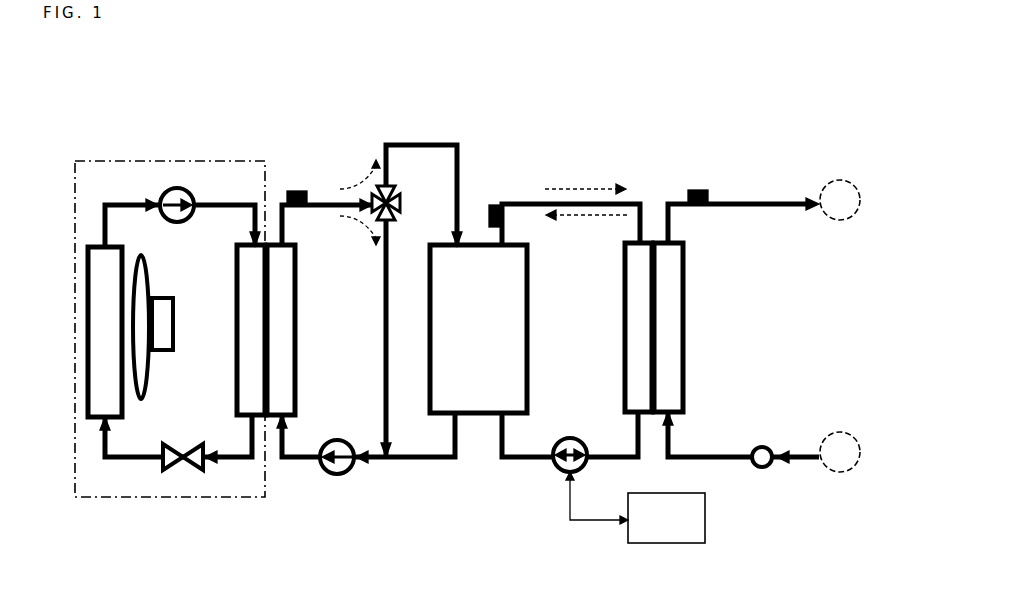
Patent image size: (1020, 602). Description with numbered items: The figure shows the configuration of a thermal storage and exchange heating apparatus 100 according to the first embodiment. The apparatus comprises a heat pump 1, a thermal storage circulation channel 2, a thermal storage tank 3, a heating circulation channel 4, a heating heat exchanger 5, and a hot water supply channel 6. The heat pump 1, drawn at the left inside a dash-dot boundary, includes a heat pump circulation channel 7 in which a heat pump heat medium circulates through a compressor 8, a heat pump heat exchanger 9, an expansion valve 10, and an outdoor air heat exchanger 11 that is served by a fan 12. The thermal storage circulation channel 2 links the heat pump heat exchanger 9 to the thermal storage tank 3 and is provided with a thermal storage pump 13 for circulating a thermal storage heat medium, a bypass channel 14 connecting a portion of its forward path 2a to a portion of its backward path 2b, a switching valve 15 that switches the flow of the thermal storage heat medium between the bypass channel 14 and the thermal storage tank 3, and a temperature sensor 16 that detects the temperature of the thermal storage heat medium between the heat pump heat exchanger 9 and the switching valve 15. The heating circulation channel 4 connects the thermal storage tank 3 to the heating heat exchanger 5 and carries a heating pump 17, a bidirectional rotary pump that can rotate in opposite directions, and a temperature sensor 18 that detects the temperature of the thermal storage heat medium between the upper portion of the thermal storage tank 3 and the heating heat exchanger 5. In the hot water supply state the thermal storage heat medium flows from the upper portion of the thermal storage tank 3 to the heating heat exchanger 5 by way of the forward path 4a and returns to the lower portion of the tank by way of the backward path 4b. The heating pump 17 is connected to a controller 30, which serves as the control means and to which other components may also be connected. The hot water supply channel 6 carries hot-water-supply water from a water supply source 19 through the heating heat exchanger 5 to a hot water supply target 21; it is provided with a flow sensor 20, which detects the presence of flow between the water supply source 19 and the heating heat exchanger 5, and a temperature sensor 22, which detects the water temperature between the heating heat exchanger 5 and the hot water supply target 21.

The thermal storage and exchange heating apparatus 100 is at (472, 115).
The heat pump 1 is at (167, 161).
The heat pump circulation channel 7 is at (128, 200).
The compressor 8 is at (190, 188).
The heat pump heat exchanger 9 is at (295, 312).
The expansion valve 10 is at (190, 472).
The outdoor air heat exchanger 11 is at (87, 280).
The fan 12 is at (152, 270).
The thermal storage circulation channel 2 is at (445, 460).
The forward path 2a is at (408, 145).
The backward path 2b is at (405, 460).
The thermal storage tank 3 is at (527, 318).
The thermal storage pump 13 is at (330, 472).
The bypass channel 14 is at (386, 352).
The switching valve 15 is at (400, 205).
The temperature sensor 16 is at (292, 190).
The heating pump 17 is at (556, 470).
The temperature sensor 18 is at (496, 205).
The heating circulation channel 4 is at (529, 200).
The forward path 4a is at (632, 200).
The backward path 4b is at (520, 460).
The heating heat exchanger 5 is at (683, 322).
The hot water supply channel 6 is at (725, 206).
The water supply source 19 is at (840, 432).
The flow sensor 20 is at (765, 446).
The hot water supply target 21 is at (840, 180).
The temperature sensor 22 is at (692, 188).
The controller 30 is at (705, 520).